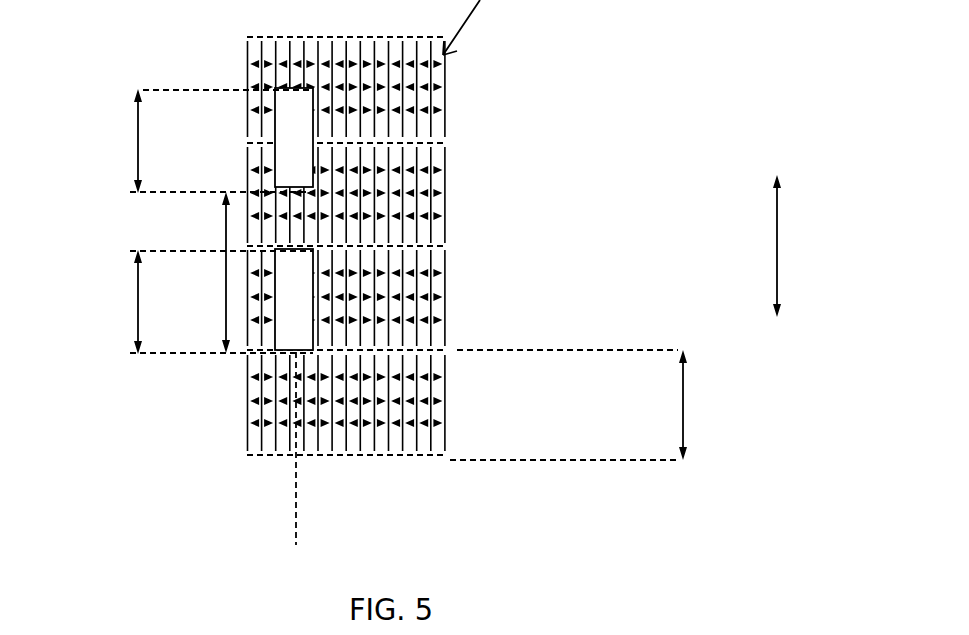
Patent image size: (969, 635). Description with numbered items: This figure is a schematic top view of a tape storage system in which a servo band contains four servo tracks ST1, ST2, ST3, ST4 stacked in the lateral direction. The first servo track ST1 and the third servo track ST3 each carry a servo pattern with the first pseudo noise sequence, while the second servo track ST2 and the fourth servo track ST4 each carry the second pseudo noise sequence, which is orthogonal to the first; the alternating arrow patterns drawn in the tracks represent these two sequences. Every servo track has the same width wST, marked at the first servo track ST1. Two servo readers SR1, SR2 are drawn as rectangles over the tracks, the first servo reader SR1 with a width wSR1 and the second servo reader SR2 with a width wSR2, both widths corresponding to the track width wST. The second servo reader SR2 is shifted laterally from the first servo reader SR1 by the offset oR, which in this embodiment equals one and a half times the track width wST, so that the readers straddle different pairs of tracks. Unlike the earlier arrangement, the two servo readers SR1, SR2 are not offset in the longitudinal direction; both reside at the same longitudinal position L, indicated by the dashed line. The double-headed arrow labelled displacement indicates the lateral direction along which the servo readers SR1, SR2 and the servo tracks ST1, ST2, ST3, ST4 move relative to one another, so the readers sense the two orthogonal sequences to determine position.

The first servo reader SR1 is at (293, 350).
The second servo reader SR2 is at (275, 132).
The first servo track ST1 is at (457, 418).
The second servo track ST2 is at (452, 304).
The third servo track ST3 is at (452, 193).
The fourth servo track ST4 is at (452, 91).
The width of first servo reader wSR1 is at (181, 302).
The width of second servo reader wSR2 is at (181, 141).
The lateral offset of servo readers oR is at (207, 272).
The width of servo track wST is at (609, 405).
The longitudinal position L is at (277, 462).
The displacement direction displacement is at (758, 256).